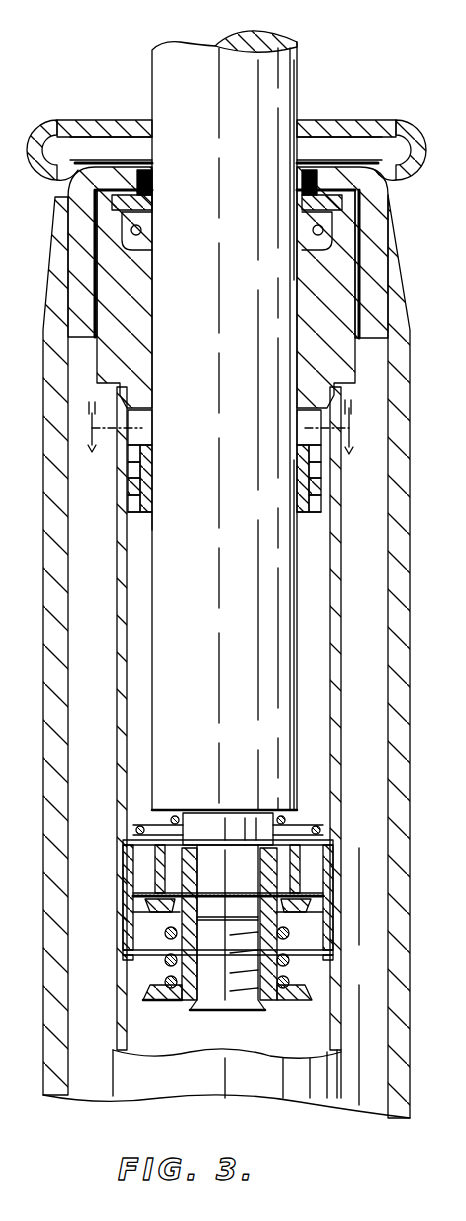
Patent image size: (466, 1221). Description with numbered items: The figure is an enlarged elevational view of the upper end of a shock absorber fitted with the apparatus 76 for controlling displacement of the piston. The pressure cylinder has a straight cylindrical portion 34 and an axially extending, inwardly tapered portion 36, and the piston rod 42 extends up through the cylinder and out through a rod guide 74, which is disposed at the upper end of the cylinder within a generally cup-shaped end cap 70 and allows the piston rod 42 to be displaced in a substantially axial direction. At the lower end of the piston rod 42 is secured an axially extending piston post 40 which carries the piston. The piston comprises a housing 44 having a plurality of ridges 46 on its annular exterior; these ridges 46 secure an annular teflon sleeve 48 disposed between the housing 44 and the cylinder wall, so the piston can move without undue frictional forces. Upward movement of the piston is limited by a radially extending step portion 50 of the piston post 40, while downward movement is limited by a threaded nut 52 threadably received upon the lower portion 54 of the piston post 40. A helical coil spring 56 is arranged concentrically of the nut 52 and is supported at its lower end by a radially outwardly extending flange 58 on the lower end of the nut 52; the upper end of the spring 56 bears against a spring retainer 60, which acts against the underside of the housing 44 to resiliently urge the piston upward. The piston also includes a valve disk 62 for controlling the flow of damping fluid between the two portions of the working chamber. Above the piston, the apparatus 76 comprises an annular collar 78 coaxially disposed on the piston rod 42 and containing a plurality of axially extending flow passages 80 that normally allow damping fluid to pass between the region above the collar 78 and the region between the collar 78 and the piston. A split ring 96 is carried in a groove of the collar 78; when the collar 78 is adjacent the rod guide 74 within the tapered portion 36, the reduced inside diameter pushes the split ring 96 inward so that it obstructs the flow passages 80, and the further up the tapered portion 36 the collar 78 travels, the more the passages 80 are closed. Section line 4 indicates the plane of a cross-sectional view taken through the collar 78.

The section line 4- 4 is at (85, 440).
The straight cylindrical portion 34 is at (363, 976).
The inwardly tapered portion 36 is at (359, 848).
The piston post 40 is at (213, 1000).
The piston rod 42 is at (160, 637).
The housing 44 is at (125, 845).
The ridges 46 is at (126, 915).
The teflon sleeve 48 is at (126, 928).
The step portion 50 is at (172, 822).
The threaded nut 52 is at (160, 1000).
The lower portion 54 is at (255, 1010).
The helical coil spring 56 is at (166, 962).
The flange 58 is at (307, 1000).
The spring retainer 60 is at (135, 900).
The valve disk 62 is at (136, 832).
The end cap 70 is at (75, 227).
The rod guide 74 is at (103, 300).
The apparatus for controlling displacement of the piston 76 is at (128, 510).
The annular collar 78 is at (134, 456).
The flow passages 80 is at (134, 490).
The split ring 96 is at (134, 472).